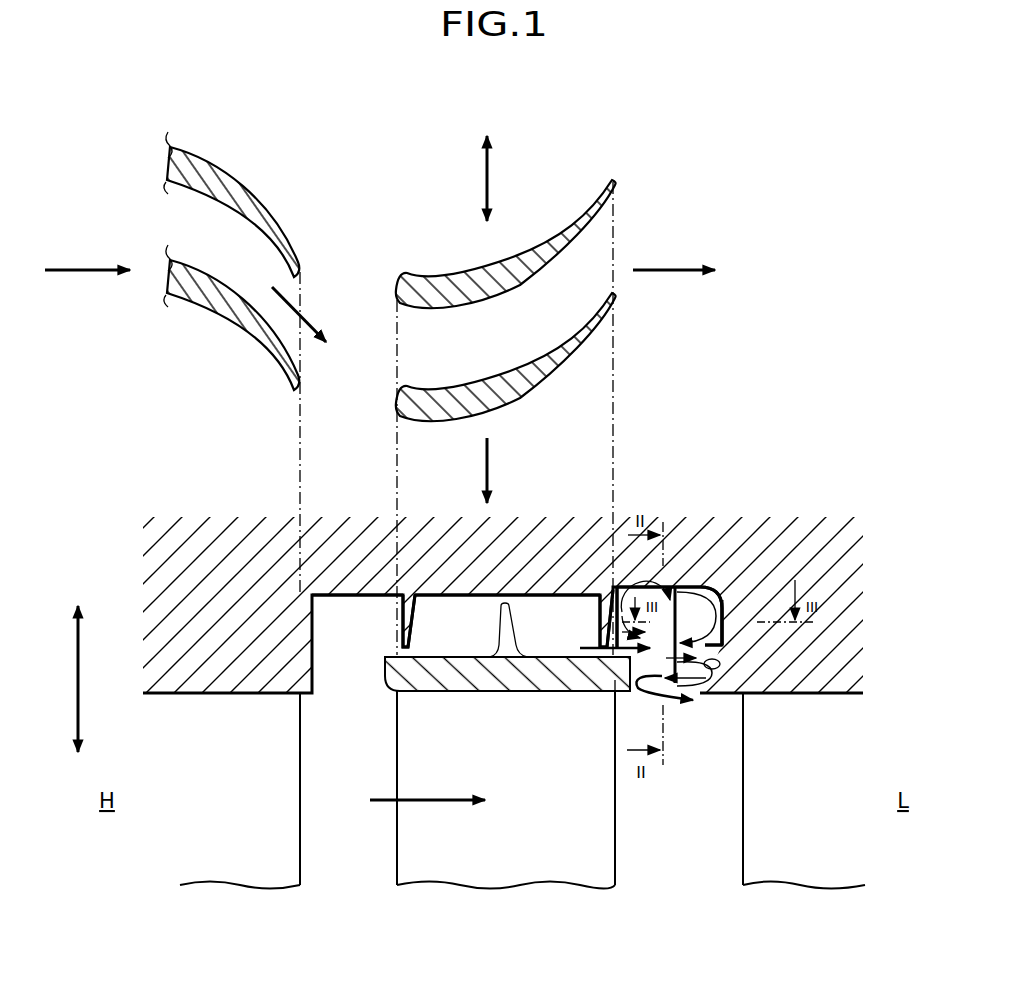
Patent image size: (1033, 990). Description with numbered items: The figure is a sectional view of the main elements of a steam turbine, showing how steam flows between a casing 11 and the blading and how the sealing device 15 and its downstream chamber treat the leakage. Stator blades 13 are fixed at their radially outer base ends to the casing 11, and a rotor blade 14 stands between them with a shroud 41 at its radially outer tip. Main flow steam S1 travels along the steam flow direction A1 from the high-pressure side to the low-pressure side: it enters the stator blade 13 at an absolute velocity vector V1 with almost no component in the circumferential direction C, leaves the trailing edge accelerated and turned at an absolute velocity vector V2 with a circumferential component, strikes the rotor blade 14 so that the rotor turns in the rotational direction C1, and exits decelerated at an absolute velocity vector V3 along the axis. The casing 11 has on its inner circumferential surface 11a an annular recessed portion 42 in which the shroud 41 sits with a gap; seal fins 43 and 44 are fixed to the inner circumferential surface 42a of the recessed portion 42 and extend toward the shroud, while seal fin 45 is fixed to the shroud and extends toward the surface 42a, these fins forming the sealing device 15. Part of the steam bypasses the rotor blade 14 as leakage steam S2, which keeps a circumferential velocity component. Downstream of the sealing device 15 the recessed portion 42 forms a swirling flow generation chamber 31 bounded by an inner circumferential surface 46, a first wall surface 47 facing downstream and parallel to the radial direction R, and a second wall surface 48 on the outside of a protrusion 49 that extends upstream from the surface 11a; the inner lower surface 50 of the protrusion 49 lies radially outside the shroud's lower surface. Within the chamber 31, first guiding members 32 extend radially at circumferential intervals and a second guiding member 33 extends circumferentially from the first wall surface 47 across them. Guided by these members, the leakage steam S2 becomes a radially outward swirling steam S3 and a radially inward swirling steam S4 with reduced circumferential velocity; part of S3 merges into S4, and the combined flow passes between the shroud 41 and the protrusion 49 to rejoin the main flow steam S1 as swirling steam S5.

The casing 11 is at (755, 498).
The inner circumferential surface 11a is at (815, 693).
The stator blade 13 is at (228, 165).
The rotor blade 14 is at (435, 272).
The sealing device 15 is at (380, 632).
The swirling flow generation chamber 31 is at (723, 605).
The first guiding member 32 is at (665, 585).
The second guiding member 33 is at (720, 637).
The shroud 41 is at (535, 672).
The recessed portion 42 is at (372, 598).
The inner circumferential surface of recessed portion 42a is at (460, 598).
The seal fin 43 is at (392, 632).
The seal fin 44 is at (597, 620).
The seal fin 45 is at (515, 625).
The inner circumferential surface 46 is at (677, 592).
The first wall surface 47 is at (700, 613).
The second wall surface 48 is at (697, 688).
The protrusion 49 is at (703, 690).
The inner lower surface 50 is at (722, 690).
The absolute velocity vector V1 is at (80, 268).
The absolute velocity vector V2 is at (313, 318).
The absolute velocity vector V3 is at (672, 268).
The circumferential direction C is at (501, 178).
The rotational direction C1 is at (490, 470).
The steam flow direction A1 is at (427, 785).
The main flow steam S1 is at (437, 800).
The leakage steam S2 is at (628, 692).
The swirling steam S3 is at (667, 582).
The swirling steam S4 is at (745, 668).
The swirling steam S5 is at (673, 700).
The radial direction R is at (91, 679).